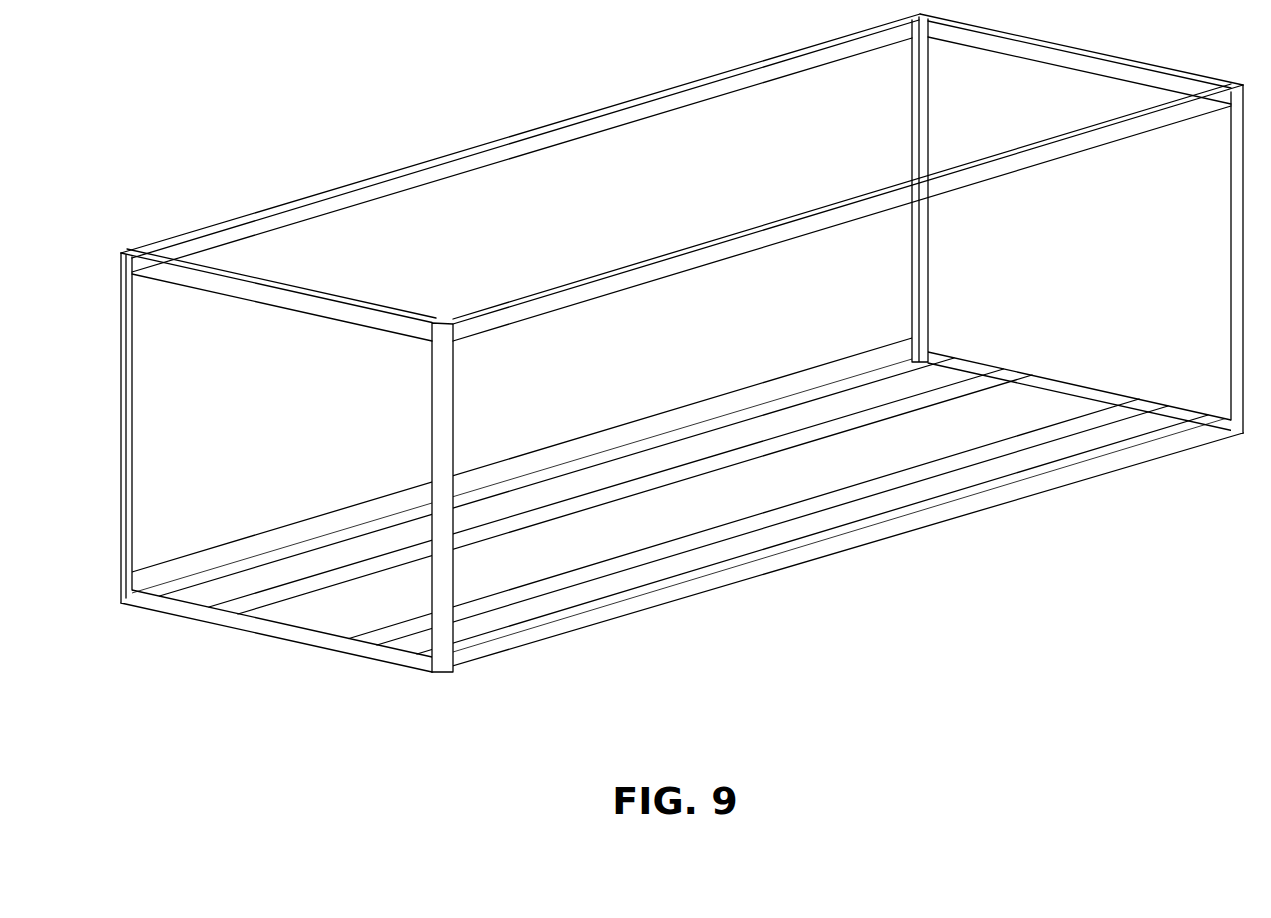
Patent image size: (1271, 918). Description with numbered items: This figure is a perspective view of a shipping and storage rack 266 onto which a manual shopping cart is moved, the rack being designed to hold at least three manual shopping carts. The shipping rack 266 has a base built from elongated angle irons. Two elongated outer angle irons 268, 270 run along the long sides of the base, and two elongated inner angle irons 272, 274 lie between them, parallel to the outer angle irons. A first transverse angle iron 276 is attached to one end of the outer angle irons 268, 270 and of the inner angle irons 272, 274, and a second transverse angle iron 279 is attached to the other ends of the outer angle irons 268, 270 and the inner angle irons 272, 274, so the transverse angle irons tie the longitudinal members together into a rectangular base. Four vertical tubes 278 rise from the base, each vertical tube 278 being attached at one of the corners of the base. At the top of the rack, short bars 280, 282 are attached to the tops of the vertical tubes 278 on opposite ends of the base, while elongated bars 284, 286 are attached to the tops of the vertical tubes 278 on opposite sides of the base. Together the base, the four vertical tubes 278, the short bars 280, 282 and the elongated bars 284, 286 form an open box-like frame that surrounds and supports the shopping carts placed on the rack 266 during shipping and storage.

The shipping and storage rack 266 is at (370, 95).
The elongated outer angle iron 268 is at (293, 523).
The elongated outer angle iron 270 is at (722, 591).
The elongated inner angle iron 272 is at (690, 463).
The elongated inner angle iron 274 is at (843, 505).
The first transverse angle iron 276 is at (254, 633).
The vertical tube 278 is at (911, 128).
The second transverse angle iron 279 is at (1094, 385).
The short bar 280 is at (368, 305).
The short bar 282 is at (1042, 66).
The elongated bar 284 is at (590, 112).
The elongated bar 286 is at (660, 260).